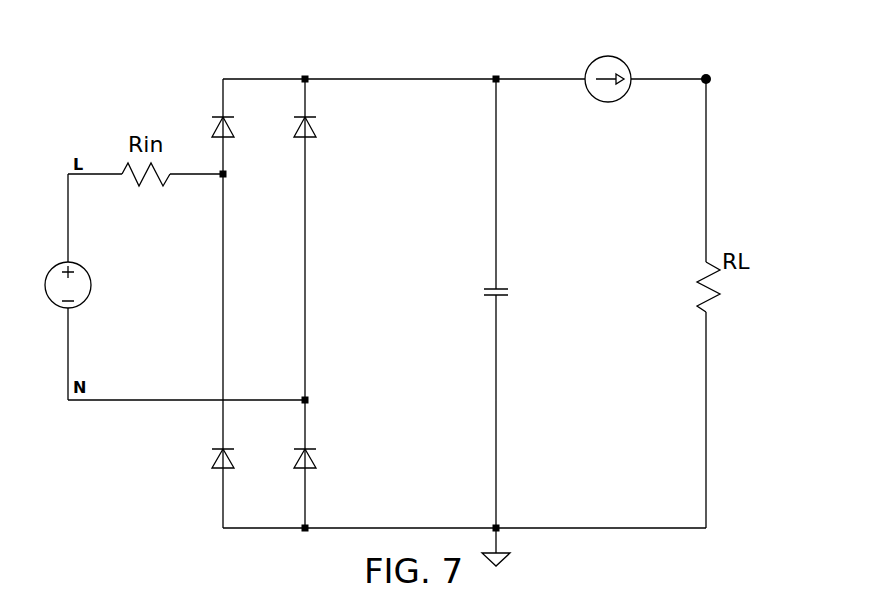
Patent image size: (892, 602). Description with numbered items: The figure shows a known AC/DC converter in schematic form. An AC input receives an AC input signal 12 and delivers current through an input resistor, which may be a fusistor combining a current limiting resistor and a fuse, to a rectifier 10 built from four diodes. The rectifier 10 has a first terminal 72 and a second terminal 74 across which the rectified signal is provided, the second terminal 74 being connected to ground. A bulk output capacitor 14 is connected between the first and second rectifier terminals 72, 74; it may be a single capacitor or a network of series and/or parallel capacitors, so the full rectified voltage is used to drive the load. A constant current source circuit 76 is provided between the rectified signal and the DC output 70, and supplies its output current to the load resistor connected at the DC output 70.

The rectifier 10 is at (191, 477).
The AC input signal 12 is at (91, 290).
The bulk output capacitor 14 is at (504, 297).
The DC output 70 is at (711, 75).
The first terminal 72 is at (497, 75).
The second terminal 74 is at (500, 525).
The constant current source circuit 76 is at (632, 66).